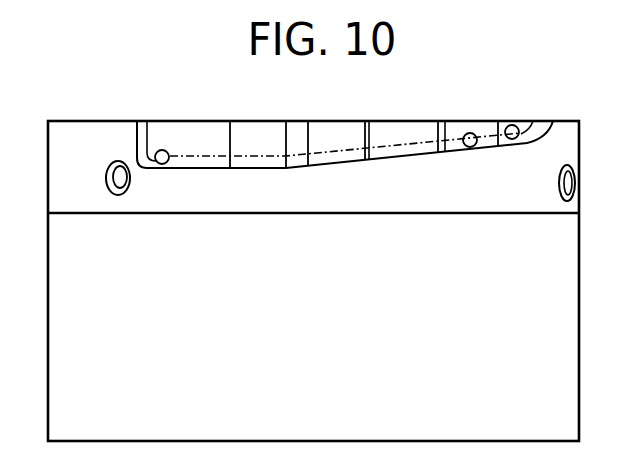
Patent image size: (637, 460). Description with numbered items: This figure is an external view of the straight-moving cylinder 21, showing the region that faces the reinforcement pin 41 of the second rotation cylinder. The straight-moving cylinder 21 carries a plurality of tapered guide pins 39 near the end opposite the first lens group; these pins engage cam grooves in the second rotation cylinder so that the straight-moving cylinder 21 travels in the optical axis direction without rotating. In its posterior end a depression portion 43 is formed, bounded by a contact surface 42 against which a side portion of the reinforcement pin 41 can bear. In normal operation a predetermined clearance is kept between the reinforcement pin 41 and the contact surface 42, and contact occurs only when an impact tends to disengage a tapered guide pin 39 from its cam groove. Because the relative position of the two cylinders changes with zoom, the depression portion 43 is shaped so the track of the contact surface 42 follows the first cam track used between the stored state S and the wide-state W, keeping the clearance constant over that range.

The straight-moving cylinder 21 is at (67, 120).
The tapered guide pin 39 is at (120, 161).
The reinforcement pin 41 is at (473, 131).
The contact surface 42 is at (355, 158).
The depression portion 43 is at (272, 156).
The stored state S is at (171, 130).
The wide-state W is at (465, 118).